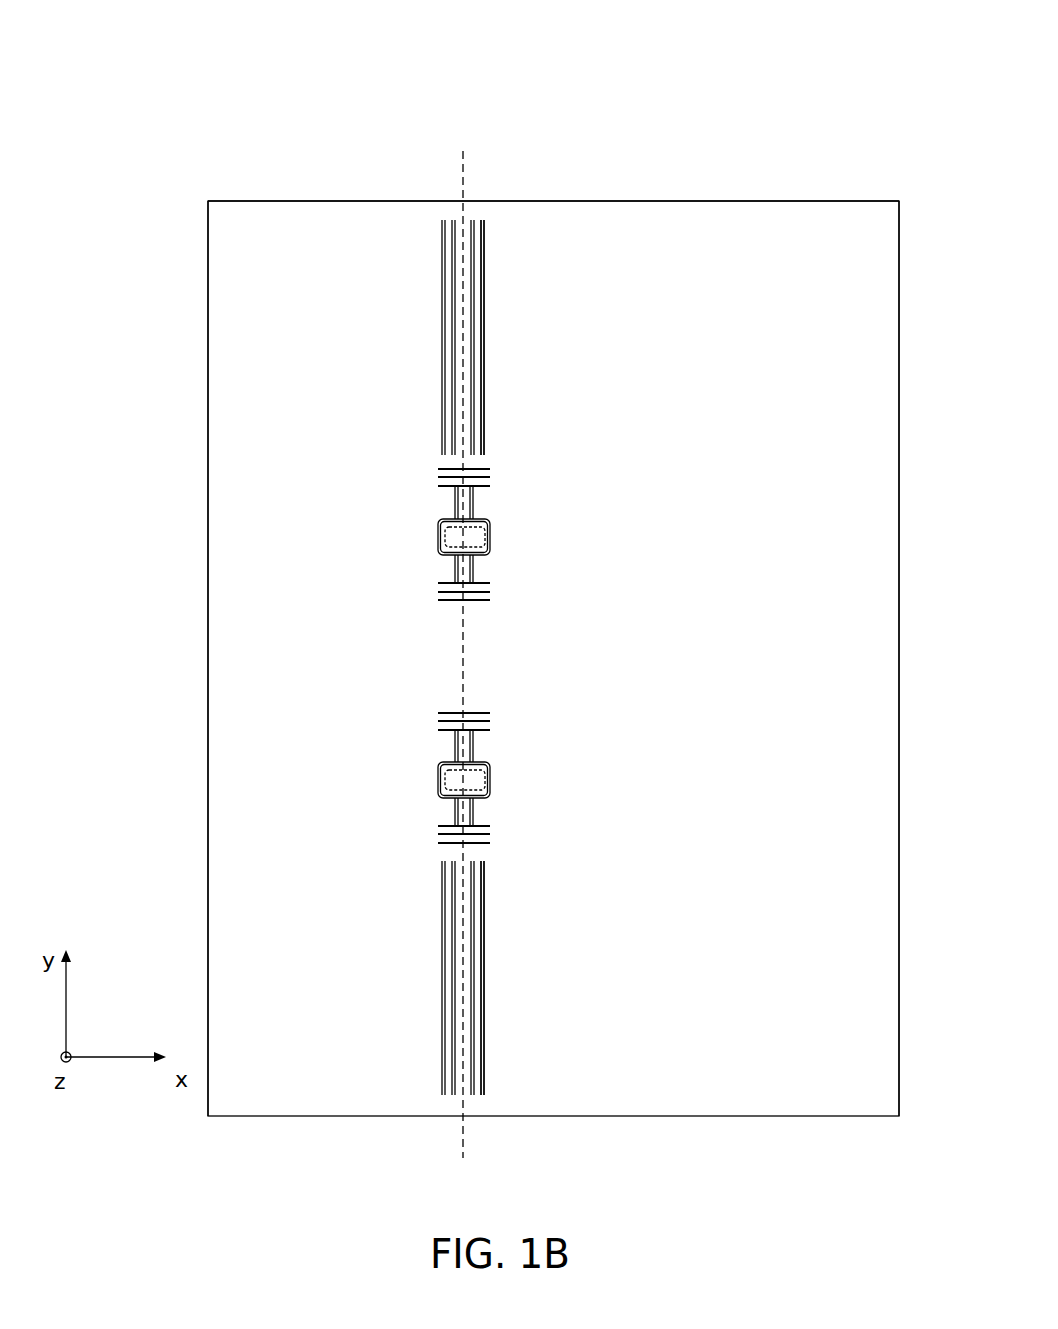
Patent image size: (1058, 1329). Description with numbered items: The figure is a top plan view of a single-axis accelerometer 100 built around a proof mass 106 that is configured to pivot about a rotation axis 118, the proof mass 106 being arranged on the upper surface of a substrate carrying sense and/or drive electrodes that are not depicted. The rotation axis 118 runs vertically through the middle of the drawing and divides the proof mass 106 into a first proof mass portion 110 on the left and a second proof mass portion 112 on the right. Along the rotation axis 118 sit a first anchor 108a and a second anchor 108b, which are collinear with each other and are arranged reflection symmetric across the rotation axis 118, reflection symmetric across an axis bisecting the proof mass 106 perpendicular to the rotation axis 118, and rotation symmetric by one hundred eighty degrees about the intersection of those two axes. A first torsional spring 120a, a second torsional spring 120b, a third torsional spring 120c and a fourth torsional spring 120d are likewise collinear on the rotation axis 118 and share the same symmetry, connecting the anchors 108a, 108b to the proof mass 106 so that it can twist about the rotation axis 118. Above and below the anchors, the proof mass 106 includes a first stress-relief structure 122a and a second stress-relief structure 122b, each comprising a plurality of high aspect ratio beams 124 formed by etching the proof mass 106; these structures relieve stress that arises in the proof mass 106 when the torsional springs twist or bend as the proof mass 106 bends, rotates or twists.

The single-axis accelerometer 100 is at (895, 88).
The proof mass 106 is at (720, 201).
The first anchor 108a is at (438, 537).
The second anchor 108b is at (438, 780).
The first proof mass portion 110 is at (222, 290).
The second proof mass portion 112 is at (878, 390).
The rotation axis 118 is at (463, 151).
The first torsional spring 120a is at (455, 495).
The second torsional spring 120b is at (455, 570).
The third torsional spring 120c is at (455, 742).
The fourth torsional spring 120d is at (455, 815).
The first stress-relief structure 122a is at (447, 220).
The second stress-relief structure 122b is at (450, 1095).
The high aspect ratio beams 124 is at (482, 240).